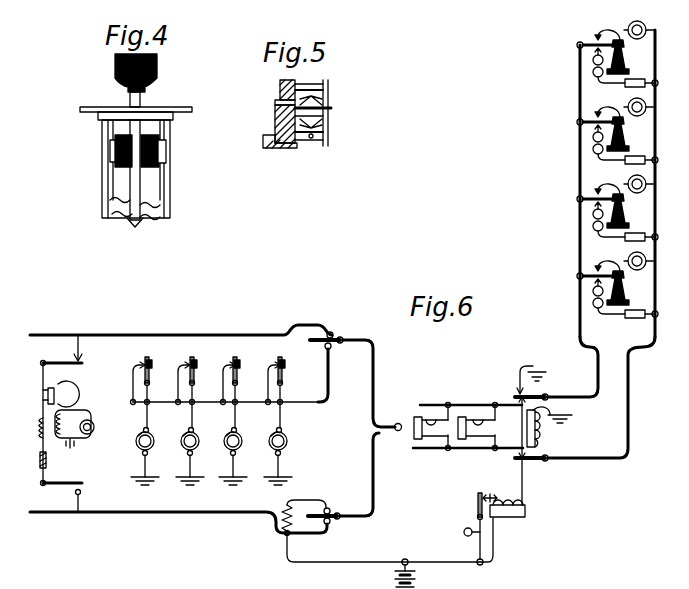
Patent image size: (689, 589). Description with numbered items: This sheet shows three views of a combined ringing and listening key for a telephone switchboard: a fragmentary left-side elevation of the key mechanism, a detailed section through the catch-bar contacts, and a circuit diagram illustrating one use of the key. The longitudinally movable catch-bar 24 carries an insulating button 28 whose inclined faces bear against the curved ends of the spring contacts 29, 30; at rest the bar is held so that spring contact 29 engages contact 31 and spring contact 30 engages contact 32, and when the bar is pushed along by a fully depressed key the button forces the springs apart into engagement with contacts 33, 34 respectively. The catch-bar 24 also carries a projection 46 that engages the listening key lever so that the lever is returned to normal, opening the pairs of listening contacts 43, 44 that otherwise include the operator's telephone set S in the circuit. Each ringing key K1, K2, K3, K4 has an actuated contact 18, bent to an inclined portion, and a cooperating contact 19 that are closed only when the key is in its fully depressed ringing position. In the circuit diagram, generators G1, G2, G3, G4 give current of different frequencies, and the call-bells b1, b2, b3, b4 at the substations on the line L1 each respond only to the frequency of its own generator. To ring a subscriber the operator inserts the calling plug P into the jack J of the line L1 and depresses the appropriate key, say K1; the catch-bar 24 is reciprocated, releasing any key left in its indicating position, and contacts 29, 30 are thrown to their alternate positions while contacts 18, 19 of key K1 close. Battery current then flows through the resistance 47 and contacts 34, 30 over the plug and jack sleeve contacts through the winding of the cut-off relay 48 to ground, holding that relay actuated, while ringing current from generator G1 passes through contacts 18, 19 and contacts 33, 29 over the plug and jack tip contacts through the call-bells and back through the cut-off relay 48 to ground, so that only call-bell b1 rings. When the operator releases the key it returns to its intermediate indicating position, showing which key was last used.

In FIG. 4, the catch-bar 24 is at (164, 181).
In FIG. 5, the catch-bar 24 is at (276, 141).
In FIG. 4, the spring contact 43 is at (147, 190).
In FIG. 6, the spring contact 43 is at (74, 365).
In FIG. 4, the cooperating contact 44 is at (135, 228).
In FIG. 6, the cooperating contact 44 is at (80, 359).
In FIG. 5, the insulating button 28 is at (331, 108).
In FIG. 5, the spring contact 29 is at (324, 134).
In FIG. 6, the spring contact 29 is at (342, 338).
In FIG. 5, the spring contact 30 is at (320, 99).
In FIG. 6, the spring contact 30 is at (339, 513).
In FIG. 6, the contact 31 is at (333, 332).
In FIG. 6, the contact 32 is at (330, 524).
In FIG. 5, the contact 33 is at (313, 139).
In FIG. 6, the contact 33 is at (330, 349).
In FIG. 5, the contact 34 is at (316, 86).
In FIG. 6, the contact 34 is at (328, 506).
In FIG. 6, the resistance 47 is at (282, 511).
In FIG. 6, the projection 46 is at (420, 574).
In FIG. 6, the cut-off relay 48 is at (538, 433).
In FIG. 6, the actuated contact 18 is at (150, 370).
In FIG. 6, the cooperating contact 19 is at (136, 365).
In FIG. 6, the ringing key K1 is at (158, 370).
In FIG. 6, the ringing key K2 is at (194, 370).
In FIG. 6, the ringing key K3 is at (238, 370).
In FIG. 6, the ringing key K4 is at (282, 370).
In FIG. 6, the generator G1 is at (152, 443).
In FIG. 6, the generator G2 is at (197, 443).
In FIG. 6, the generator G3 is at (240, 443).
In FIG. 6, the generator G4 is at (285, 443).
In FIG. 6, the telephone set S is at (66, 424).
In FIG. 6, the calling plug P is at (391, 419).
In FIG. 6, the jack J is at (462, 423).
In FIG. 6, the telephone line L1 is at (598, 245).
In FIG. 6, the call-bell b1 is at (592, 293).
In FIG. 6, the call-bell b2 is at (592, 216).
In FIG. 6, the call-bell b3 is at (592, 139).
In FIG. 6, the call-bell b4 is at (592, 62).